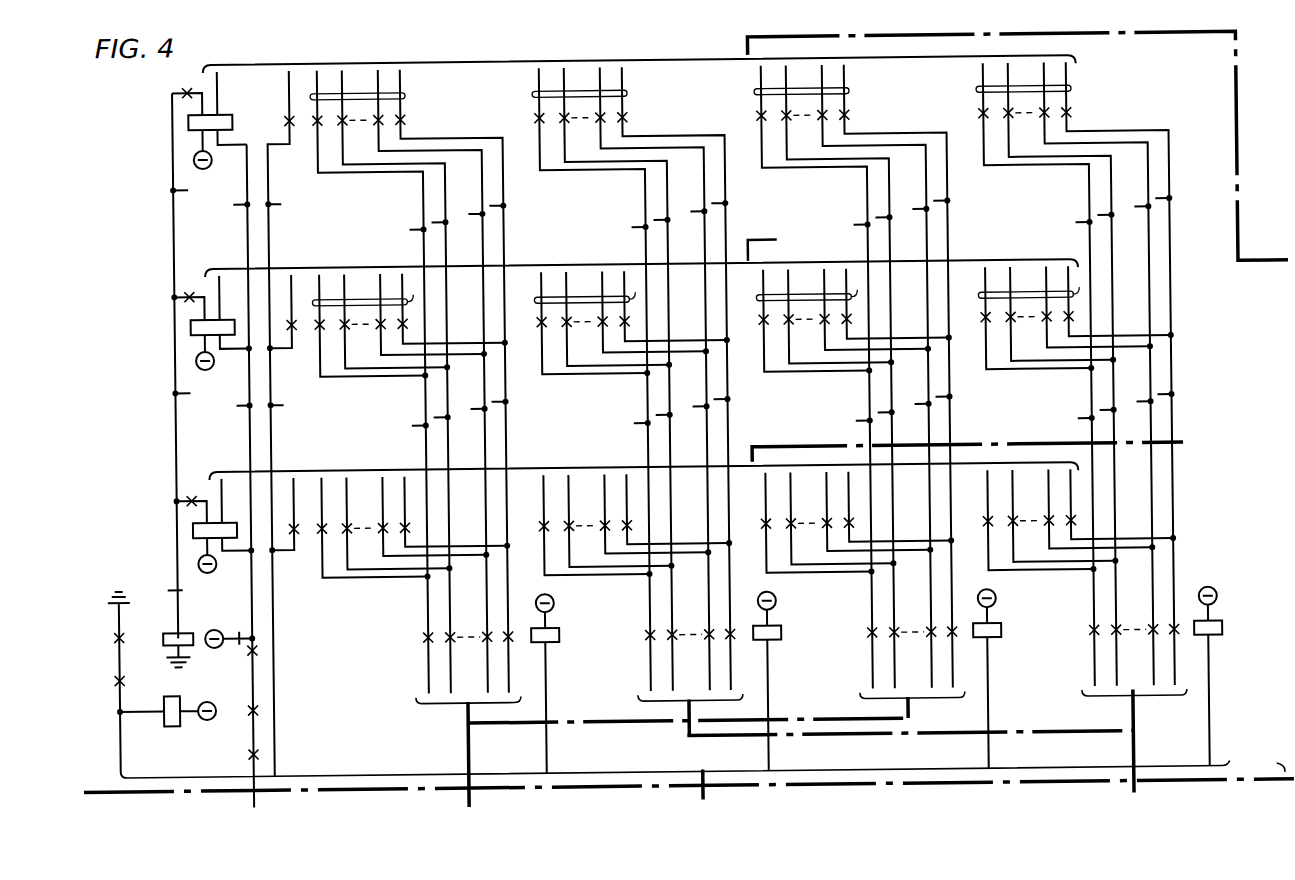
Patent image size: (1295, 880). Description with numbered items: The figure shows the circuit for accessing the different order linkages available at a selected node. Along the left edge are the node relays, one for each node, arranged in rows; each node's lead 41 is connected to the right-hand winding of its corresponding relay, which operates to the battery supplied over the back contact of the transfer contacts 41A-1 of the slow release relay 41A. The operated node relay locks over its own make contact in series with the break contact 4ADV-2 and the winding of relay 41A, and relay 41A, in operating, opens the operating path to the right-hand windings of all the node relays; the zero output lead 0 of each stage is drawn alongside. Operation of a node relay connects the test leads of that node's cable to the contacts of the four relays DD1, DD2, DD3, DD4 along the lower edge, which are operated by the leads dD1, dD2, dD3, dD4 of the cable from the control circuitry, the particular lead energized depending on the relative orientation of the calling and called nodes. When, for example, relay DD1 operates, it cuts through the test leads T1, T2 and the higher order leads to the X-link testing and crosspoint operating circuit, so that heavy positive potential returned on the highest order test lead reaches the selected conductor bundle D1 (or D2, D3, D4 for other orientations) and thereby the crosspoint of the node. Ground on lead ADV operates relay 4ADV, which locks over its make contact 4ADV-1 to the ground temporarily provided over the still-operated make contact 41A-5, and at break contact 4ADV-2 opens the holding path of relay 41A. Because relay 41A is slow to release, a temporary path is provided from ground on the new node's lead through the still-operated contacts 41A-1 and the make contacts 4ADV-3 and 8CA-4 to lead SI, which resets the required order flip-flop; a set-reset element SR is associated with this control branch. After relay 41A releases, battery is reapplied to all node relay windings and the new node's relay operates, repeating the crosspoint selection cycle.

The lead 41 is at (237, 439).
The zero output line 0 is at (283, 423).
The D1 conductor bundle D1 is at (409, 93).
The D2 conductor bundle D2 is at (631, 93).
The D3 conductor bundle D3 is at (853, 93).
The D4 conductor bundle D4 is at (1075, 93).
The lead T1 is at (637, 76).
The lead T2 is at (661, 79).
The relay DD1 is at (563, 684).
The relay DD2 is at (786, 681).
The relay DD3 is at (1006, 679).
The relay DD4 is at (1229, 676).
The lead dD1 is at (566, 763).
The lead dD2 is at (791, 761).
The lead dD3 is at (1009, 756).
The lead dD4 is at (1228, 747).
The break contact 4ADV-2 is at (170, 583).
The make contact 4ADV-1 is at (121, 677).
The make contact 4ADV-3 is at (246, 706).
The relay 4ADV is at (167, 723).
The slow release relay 41A is at (205, 628).
The transfer contacts 41A-1 is at (246, 647).
The make contact 41A-5 is at (125, 632).
The make contact 8CA-4 is at (246, 751).
The set-reset element SR is at (178, 650).
The lead ADV is at (105, 685).
The lead SI is at (250, 797).